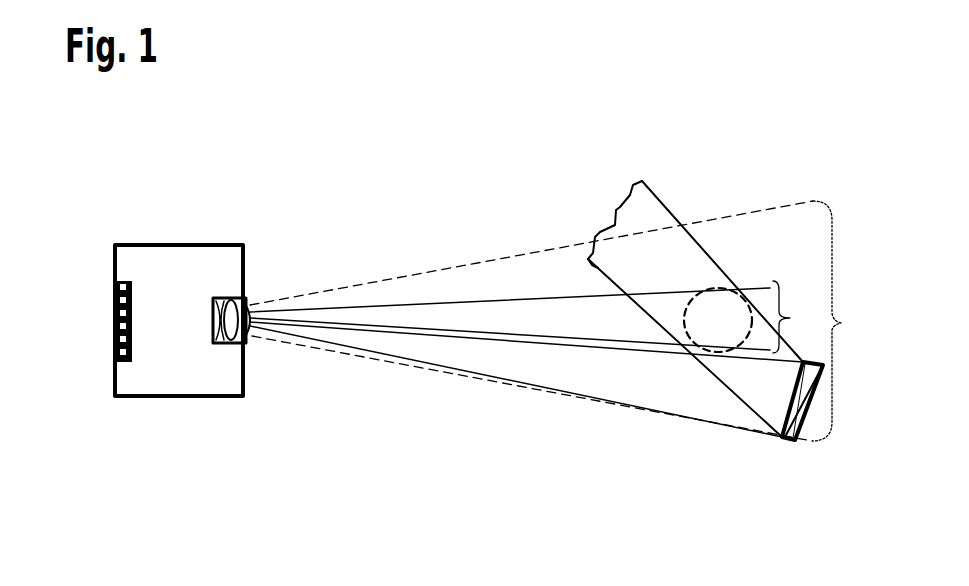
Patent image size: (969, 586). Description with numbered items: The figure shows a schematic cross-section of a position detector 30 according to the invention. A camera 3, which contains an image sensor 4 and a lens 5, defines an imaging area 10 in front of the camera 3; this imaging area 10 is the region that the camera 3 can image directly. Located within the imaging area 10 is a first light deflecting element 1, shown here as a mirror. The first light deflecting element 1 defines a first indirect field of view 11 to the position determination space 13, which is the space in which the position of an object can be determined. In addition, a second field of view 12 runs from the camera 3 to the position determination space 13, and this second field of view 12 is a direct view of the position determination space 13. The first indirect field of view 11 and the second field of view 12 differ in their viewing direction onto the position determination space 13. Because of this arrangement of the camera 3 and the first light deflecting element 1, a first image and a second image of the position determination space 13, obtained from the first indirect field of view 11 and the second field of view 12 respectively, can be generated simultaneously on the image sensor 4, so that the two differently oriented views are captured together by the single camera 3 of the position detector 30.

The position detector 30 is at (358, 129).
The camera 3 is at (186, 360).
The image sensor 4 is at (128, 296).
The lens 5 is at (232, 297).
The imaging area 10 is at (841, 323).
The first indirect field of view 11 is at (623, 167).
The second field of view 12 is at (790, 318).
The position determination space 13 is at (688, 307).
The first light deflecting element 1 is at (787, 445).